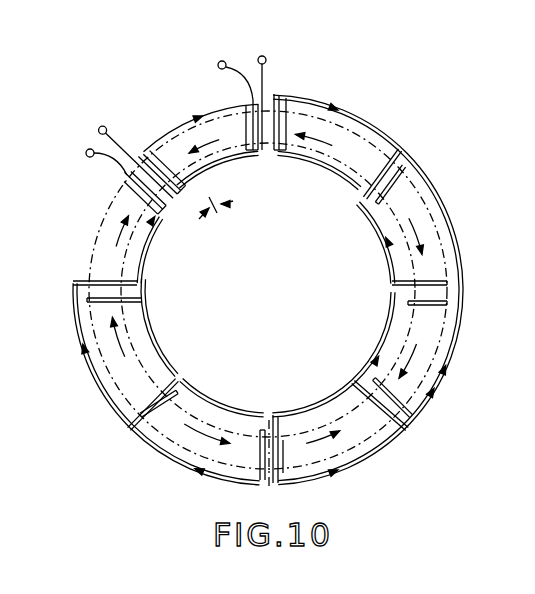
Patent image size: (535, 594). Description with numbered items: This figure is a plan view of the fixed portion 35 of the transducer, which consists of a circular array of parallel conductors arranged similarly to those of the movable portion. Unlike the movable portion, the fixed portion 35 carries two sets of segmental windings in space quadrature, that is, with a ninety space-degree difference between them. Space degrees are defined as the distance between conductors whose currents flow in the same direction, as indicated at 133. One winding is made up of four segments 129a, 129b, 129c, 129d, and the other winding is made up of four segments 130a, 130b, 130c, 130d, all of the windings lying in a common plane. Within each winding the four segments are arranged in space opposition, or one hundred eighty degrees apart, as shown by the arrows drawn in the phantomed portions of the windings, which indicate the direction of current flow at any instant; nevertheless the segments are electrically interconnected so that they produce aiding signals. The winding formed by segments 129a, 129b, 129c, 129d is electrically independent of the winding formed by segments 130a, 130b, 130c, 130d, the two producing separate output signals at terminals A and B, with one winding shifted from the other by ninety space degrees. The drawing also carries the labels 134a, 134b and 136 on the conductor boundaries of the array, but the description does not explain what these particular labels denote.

The fixed portion 35 is at (226, 320).
The winding segment 129a is at (110, 236).
The winding segment 129b is at (218, 431).
The winding segment 129c is at (413, 322).
The winding segment 129d is at (352, 160).
The winding segment 130a is at (147, 377).
The winding segment 130b is at (324, 428).
The winding segment 130c is at (413, 264).
The winding segment 130d is at (222, 121).
The space degrees indication 133 is at (214, 216).
The inner boundary conductor 134a is at (148, 262).
The outer boundary conductor 134b is at (178, 458).
The outer conductor ring 136 is at (102, 393).